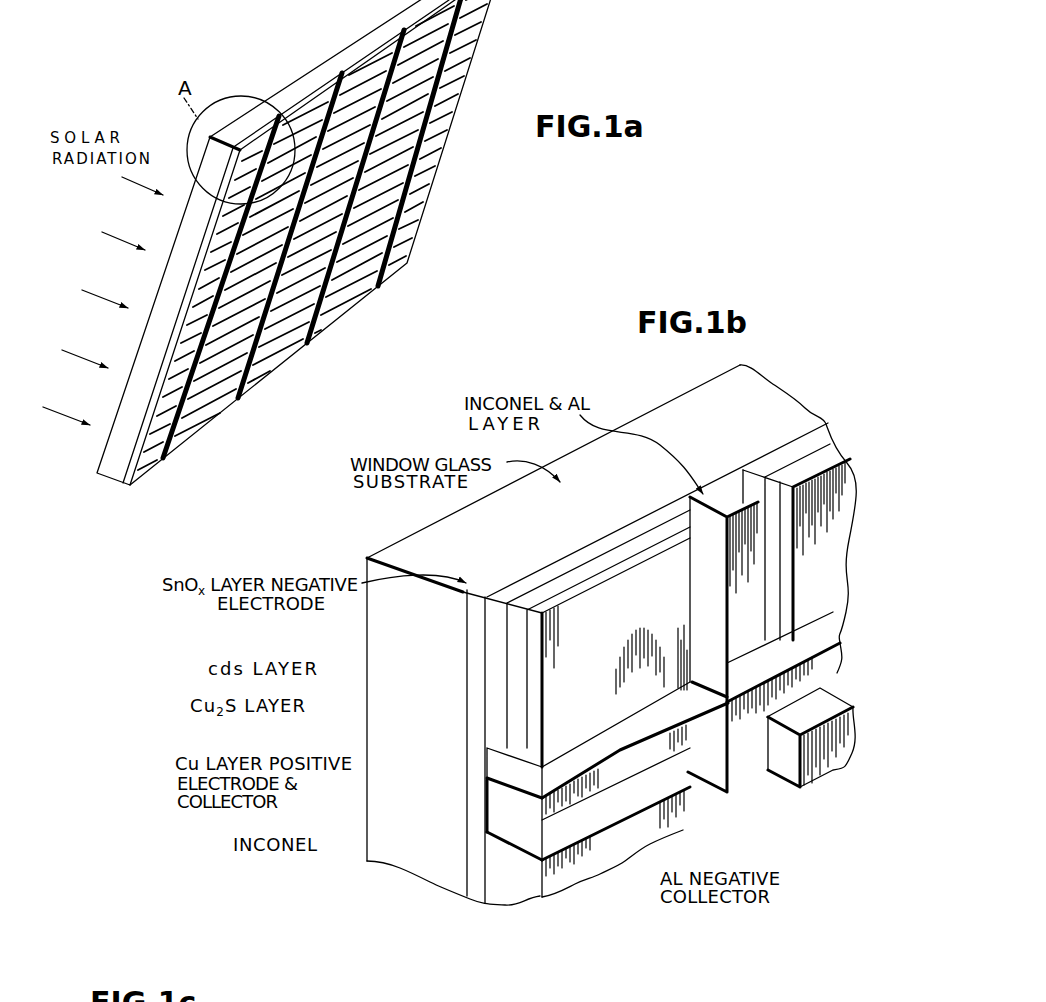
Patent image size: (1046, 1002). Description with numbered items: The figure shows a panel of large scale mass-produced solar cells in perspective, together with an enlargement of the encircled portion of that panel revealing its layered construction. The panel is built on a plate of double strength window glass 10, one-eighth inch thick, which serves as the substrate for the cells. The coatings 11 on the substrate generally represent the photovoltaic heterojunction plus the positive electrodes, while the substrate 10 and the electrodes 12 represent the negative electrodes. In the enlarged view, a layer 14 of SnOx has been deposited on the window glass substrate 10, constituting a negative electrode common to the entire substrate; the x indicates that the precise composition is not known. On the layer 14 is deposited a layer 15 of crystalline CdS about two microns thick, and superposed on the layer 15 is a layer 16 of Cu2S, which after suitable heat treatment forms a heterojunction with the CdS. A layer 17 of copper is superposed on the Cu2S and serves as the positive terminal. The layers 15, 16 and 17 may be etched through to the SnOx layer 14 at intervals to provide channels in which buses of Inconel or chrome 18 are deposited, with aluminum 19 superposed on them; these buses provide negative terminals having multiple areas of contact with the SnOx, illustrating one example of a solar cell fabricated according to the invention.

In FIG. 1A, the window glass substrate 10 is at (312, 80).
In FIG. 1B, the window glass substrate 10 is at (546, 511).
In FIG. 1A, the coatings of photovoltaic heterojunction 11 is at (300, 116).
In FIG. 1A, the negative electrodes 12 is at (340, 80).
In FIG. 1B, the negative electrodes 12 is at (486, 831).
In FIG. 1B, the SnOx layer 14 is at (538, 562).
In FIG. 1B, the CdS layer 15 is at (492, 623).
In FIG. 1B, the Cu2S layer 16 is at (509, 672).
In FIG. 1B, the copper layer 17 is at (532, 733).
In FIG. 1B, the Inconel or chrome bus 18 is at (486, 791).
In FIG. 1B, the aluminum 19 is at (572, 793).